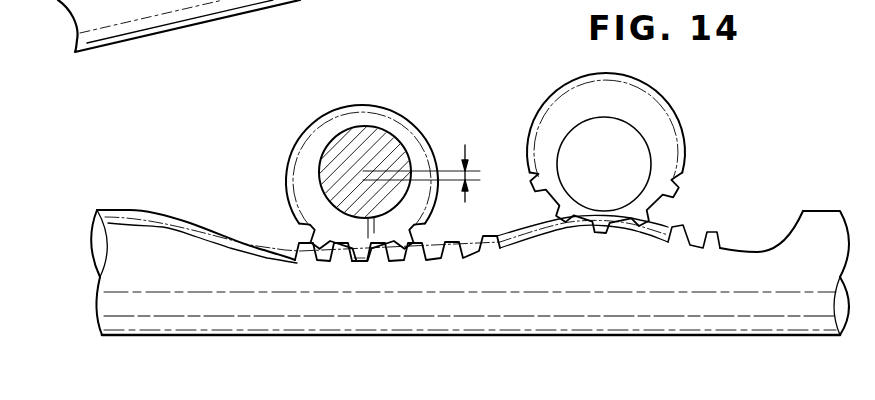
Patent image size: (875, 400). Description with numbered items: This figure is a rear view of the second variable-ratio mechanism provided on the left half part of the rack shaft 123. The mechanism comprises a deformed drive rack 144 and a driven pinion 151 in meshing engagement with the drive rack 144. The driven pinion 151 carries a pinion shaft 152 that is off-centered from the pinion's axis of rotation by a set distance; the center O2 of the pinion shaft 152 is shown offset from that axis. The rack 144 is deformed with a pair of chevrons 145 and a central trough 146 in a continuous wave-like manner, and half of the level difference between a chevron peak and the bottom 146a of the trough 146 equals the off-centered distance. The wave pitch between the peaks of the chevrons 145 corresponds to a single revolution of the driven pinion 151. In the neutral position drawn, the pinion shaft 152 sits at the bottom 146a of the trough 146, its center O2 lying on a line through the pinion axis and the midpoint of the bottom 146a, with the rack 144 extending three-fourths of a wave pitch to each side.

The rack shaft 123 is at (773, 320).
The drive rack 144 is at (157, 212).
The chevron 145 is at (307, 0).
The central trough 146 is at (380, 265).
The bottom of the trough 146a is at (362, 263).
The driven pinion 151 is at (322, 128).
The pinion shaft 152 is at (385, 142).
The center of the pinion shaft O2 is at (365, 171).